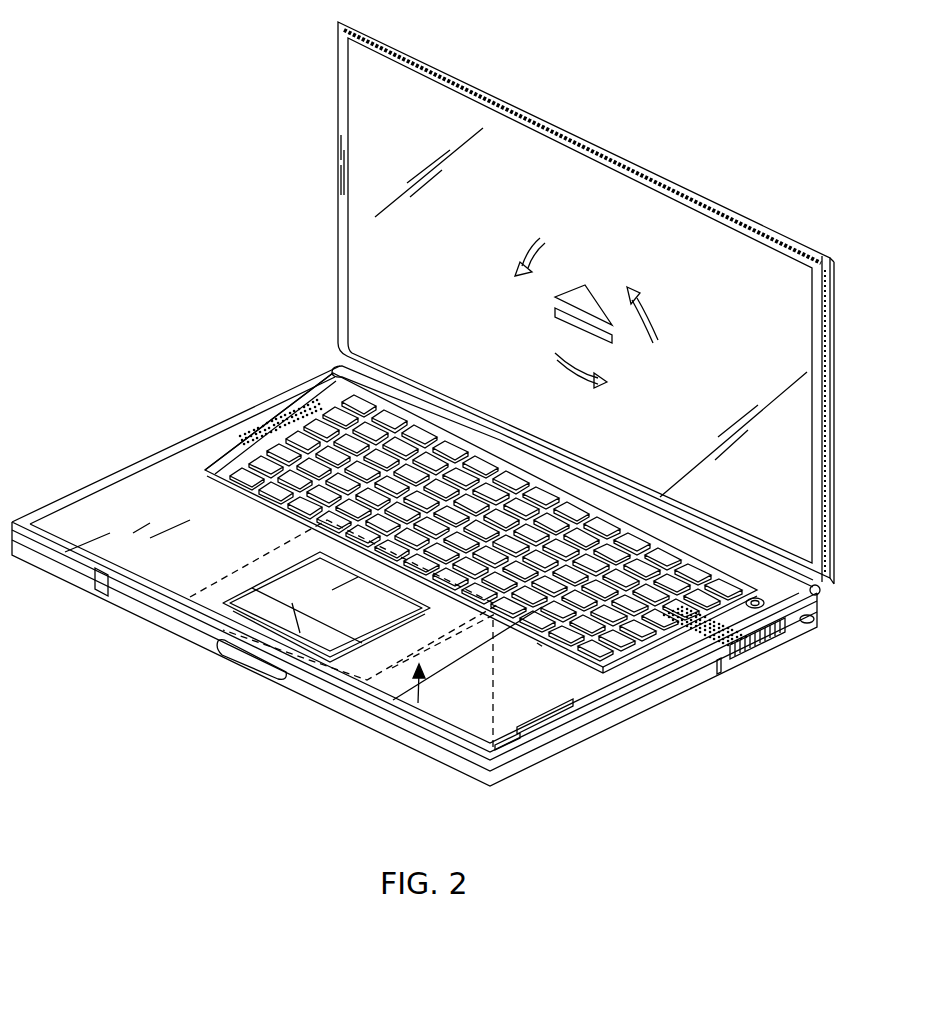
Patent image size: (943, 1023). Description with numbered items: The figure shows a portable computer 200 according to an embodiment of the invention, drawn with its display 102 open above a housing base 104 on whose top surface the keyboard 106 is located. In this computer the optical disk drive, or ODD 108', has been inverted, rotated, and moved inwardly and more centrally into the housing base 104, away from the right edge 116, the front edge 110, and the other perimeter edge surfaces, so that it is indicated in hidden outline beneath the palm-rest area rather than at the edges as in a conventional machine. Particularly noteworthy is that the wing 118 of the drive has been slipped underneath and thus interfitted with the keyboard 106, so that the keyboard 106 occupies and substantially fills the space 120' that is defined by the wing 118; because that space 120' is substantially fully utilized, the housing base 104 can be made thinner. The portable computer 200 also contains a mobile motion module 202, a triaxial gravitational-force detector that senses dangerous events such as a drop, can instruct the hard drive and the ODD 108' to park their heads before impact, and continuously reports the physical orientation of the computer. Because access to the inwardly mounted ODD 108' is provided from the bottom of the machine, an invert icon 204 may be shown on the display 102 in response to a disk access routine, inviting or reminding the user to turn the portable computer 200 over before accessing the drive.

The portable computer 200 is at (212, 143).
The display 102 is at (398, 228).
The invert icon 204 is at (523, 333).
The mobile motion module 202 is at (330, 373).
The keyboard 106 is at (240, 474).
The housing base 104 is at (165, 475).
The front edge 110 is at (198, 630).
The right edge 116 is at (657, 692).
The optical disk drive 108' is at (366, 650).
The space 120' is at (455, 723).
The wing 118 is at (537, 643).